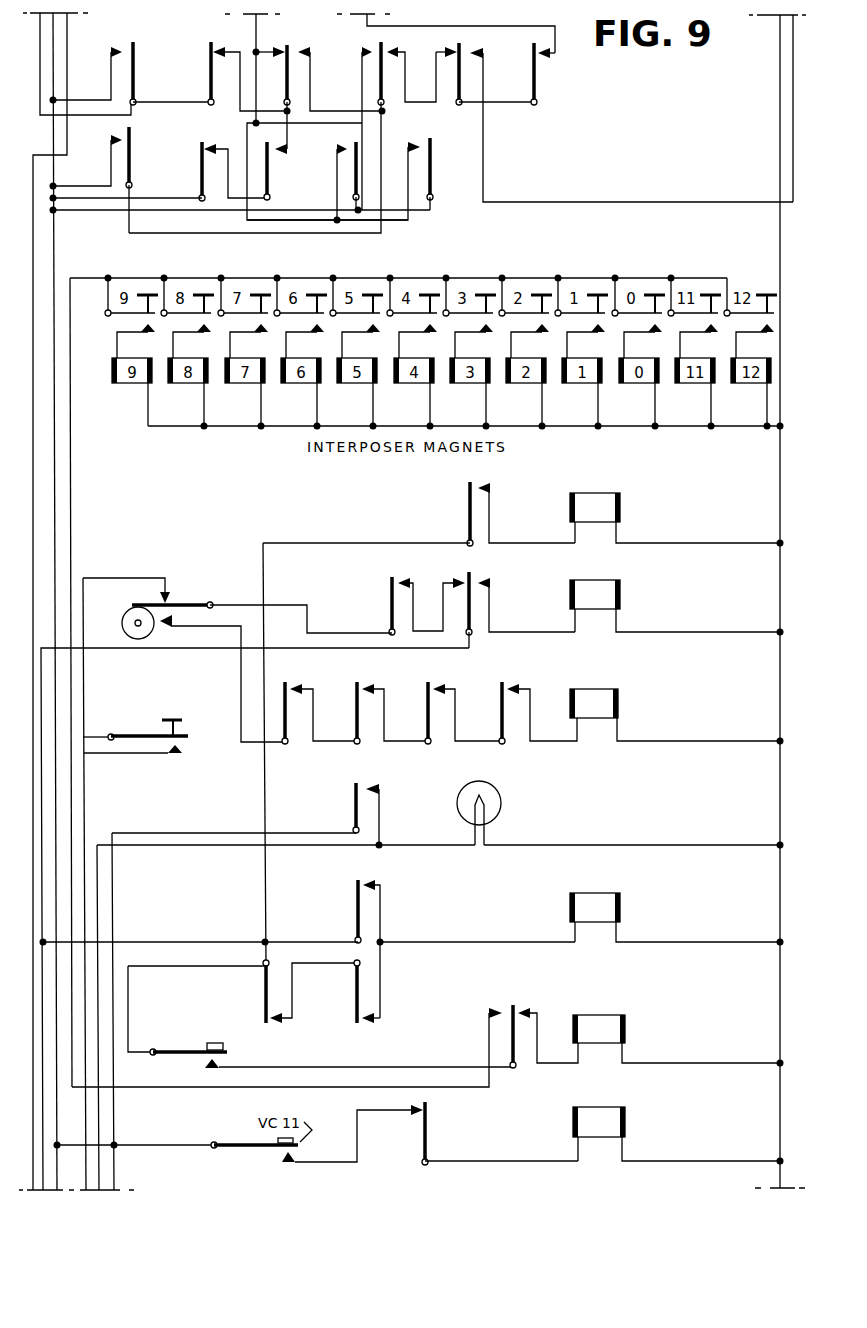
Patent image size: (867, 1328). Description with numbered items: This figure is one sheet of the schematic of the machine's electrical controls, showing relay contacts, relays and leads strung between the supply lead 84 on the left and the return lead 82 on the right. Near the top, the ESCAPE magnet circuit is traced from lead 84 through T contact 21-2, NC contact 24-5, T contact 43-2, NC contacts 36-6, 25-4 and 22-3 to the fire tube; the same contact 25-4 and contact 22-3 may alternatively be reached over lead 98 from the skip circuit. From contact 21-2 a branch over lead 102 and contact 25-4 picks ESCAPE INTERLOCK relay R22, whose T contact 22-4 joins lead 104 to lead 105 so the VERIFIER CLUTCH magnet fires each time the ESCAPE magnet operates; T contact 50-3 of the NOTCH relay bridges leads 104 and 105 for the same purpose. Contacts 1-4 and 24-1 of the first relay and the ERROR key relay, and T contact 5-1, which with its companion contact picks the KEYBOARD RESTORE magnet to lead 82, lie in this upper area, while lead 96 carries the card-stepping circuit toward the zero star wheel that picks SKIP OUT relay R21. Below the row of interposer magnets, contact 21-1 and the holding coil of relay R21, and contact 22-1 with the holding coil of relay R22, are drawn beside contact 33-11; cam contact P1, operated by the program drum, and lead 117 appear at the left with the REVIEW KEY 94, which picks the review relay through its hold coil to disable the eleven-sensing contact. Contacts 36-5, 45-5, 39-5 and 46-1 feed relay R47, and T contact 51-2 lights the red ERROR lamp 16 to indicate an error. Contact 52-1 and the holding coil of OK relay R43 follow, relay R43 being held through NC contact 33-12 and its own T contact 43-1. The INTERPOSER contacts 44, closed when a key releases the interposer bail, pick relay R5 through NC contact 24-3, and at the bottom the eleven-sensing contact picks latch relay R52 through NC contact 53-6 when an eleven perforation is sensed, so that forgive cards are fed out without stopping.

The lead 84 is at (55, 44).
The lead 96 is at (30, 258).
The lead 102 is at (35, 86).
The lead 82 is at (778, 107).
The lead 98 is at (538, 206).
The lead 104 is at (424, 210).
The lead 105 is at (394, 221).
The conductor 117 is at (140, 650).
The T contact of relay R21 21-2 is at (113, 47).
The NC contact of relay R24 24-5 is at (222, 45).
The T contact of OK relay R43 43-2 is at (272, 48).
The NC contact of relay R36 36-6 is at (387, 48).
The contact of SKIP relay R25 25-4 is at (450, 45).
The NC contact of relay R22 22-3 is at (547, 60).
The contact of relay R1 1-4 is at (118, 134).
The contact of relay R24 24-1 is at (213, 145).
The T contact of relay R22 22-4 is at (346, 146).
The T contact of relay R5 5-1 is at (283, 155).
The T contact of NOTCH relay R50 50-3 is at (418, 143).
The contact of relay R21 21-1 is at (488, 483).
The SKIP OUT relay R21 is at (618, 494).
The contact of relay R33 33-11 is at (402, 578).
The contact of relay R22 22-1 is at (484, 578).
The ESCAPE INTERLOCK relay R22 is at (612, 592).
The cam operated contact P1 is at (169, 595).
The REVIEW KEY 94 is at (190, 737).
The contact of relay R36 36-5 is at (290, 683).
The contact of ERROR 2 relay R45 45-5 is at (362, 683).
The contact of relay R39 39-5 is at (438, 683).
The contact of relay R46 46-1 is at (514, 683).
The relay R47 is at (620, 692).
The T contact of relay R51 51-2 is at (381, 782).
The ERROR lamp 16 is at (483, 782).
The contact of relay R52 52-1 is at (378, 884).
The OK relay R43 is at (620, 898).
The NC contact of relay R33 33-12 is at (278, 1024).
The T contact of OK relay R43 43-1 is at (372, 1024).
The INTERPOSER contacts 44 is at (229, 1051).
The NC contact of relay R24 24-3 is at (494, 1004).
The relay R5 is at (627, 1026).
The NC contact of relay R53 53-6 is at (428, 1102).
The latch relay R52 is at (627, 1131).